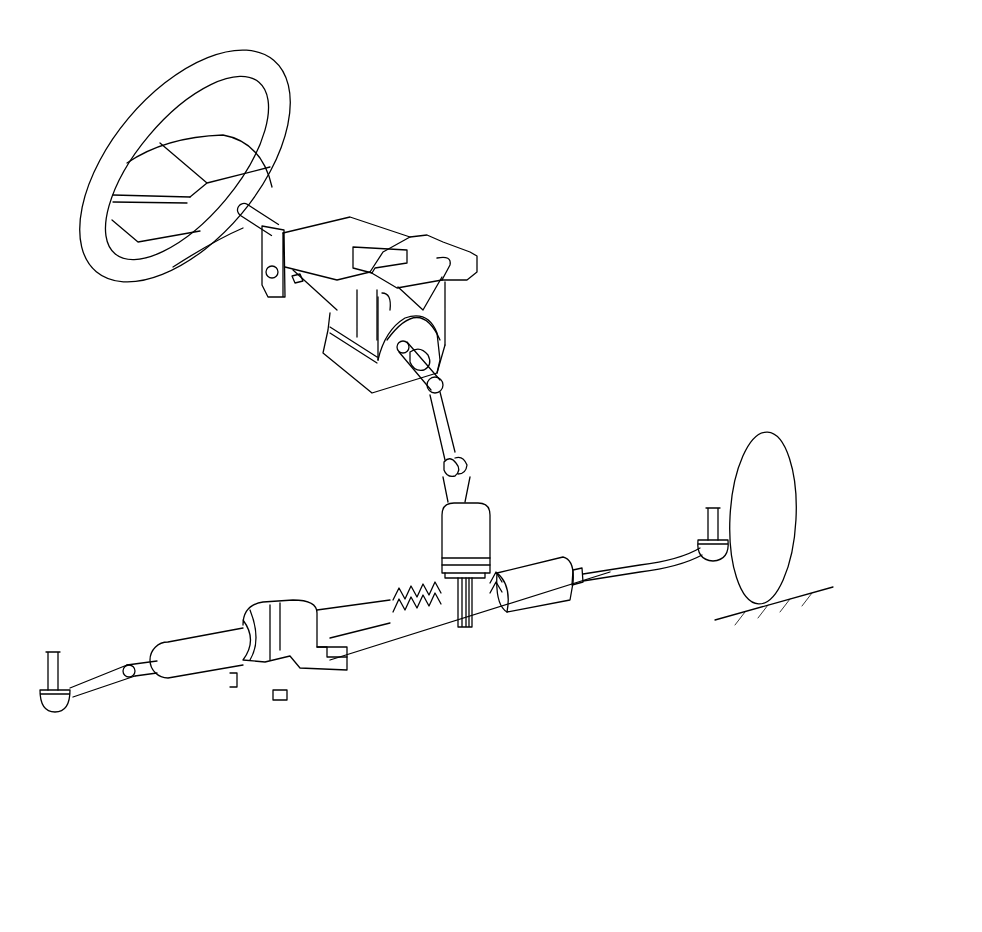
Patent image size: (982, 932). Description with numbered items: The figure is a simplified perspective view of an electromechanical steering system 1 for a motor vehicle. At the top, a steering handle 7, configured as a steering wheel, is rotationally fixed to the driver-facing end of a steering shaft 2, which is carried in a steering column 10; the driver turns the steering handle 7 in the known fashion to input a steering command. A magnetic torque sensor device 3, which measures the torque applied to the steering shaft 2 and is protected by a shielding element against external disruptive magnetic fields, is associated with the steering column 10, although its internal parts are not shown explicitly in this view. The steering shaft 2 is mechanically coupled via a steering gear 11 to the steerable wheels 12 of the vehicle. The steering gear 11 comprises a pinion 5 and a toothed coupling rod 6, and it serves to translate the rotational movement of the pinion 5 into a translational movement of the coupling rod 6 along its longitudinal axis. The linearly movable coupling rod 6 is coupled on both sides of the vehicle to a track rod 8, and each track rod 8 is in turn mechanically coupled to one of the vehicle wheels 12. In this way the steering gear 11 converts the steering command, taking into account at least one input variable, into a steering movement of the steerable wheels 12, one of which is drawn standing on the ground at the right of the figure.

The electromechanical steering system 1 is at (553, 82).
The steering shaft 2 is at (272, 227).
The magnetic torque sensor device 3 is at (316, 392).
The pinion 5 is at (466, 630).
The toothed coupling rod 6 is at (403, 607).
The steering handle 7 is at (276, 87).
The track rod 8 is at (627, 580).
The steering column 10 is at (493, 209).
The steering gear 11 is at (520, 511).
The steerable wheels 12 is at (764, 452).